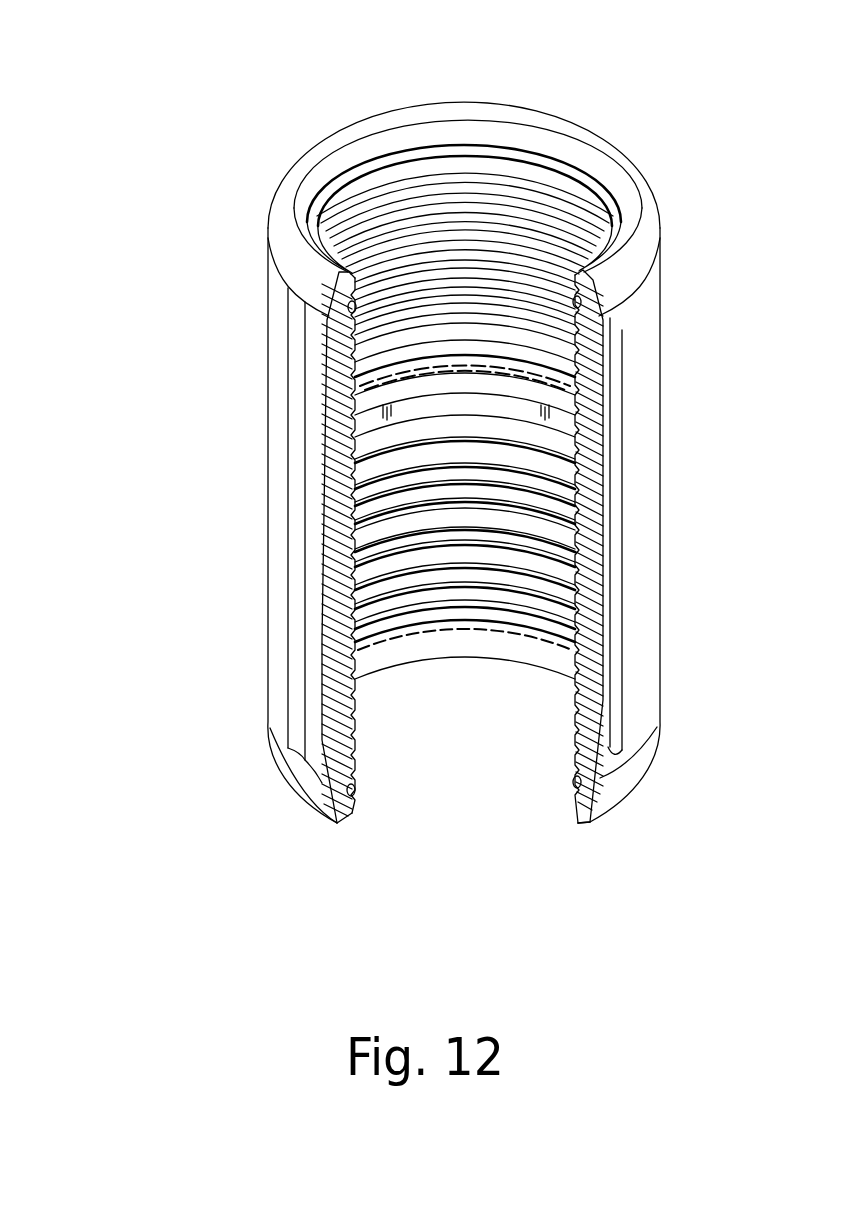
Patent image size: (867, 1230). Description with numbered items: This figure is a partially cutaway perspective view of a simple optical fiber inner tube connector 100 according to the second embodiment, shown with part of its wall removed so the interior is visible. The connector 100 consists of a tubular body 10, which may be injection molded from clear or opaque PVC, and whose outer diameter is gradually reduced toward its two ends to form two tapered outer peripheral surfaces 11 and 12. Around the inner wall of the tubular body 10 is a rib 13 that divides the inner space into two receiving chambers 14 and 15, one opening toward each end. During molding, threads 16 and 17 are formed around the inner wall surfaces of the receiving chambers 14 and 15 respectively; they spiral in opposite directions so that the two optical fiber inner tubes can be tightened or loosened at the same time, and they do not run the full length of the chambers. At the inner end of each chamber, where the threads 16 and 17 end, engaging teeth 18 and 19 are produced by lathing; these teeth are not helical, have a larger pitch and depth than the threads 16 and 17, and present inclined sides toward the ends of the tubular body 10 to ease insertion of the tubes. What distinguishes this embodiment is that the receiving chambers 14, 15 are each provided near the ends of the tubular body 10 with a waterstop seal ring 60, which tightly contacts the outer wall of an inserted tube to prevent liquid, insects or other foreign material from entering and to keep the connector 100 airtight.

The optical fiber inner tube connector 100 is at (220, 278).
The tubular body 10 is at (650, 318).
The tapered outer peripheral surface 11 is at (648, 236).
The tapered outer peripheral surface 12 is at (608, 795).
The rib 13 is at (565, 545).
The receiving chamber 14 is at (448, 130).
The receiving chamber 15 is at (572, 805).
The thread 16 is at (380, 215).
The thread 17 is at (478, 600).
The engaging tooth 18 is at (355, 440).
The engaging tooth 19 is at (355, 575).
The waterstop seal ring 60 is at (512, 168).